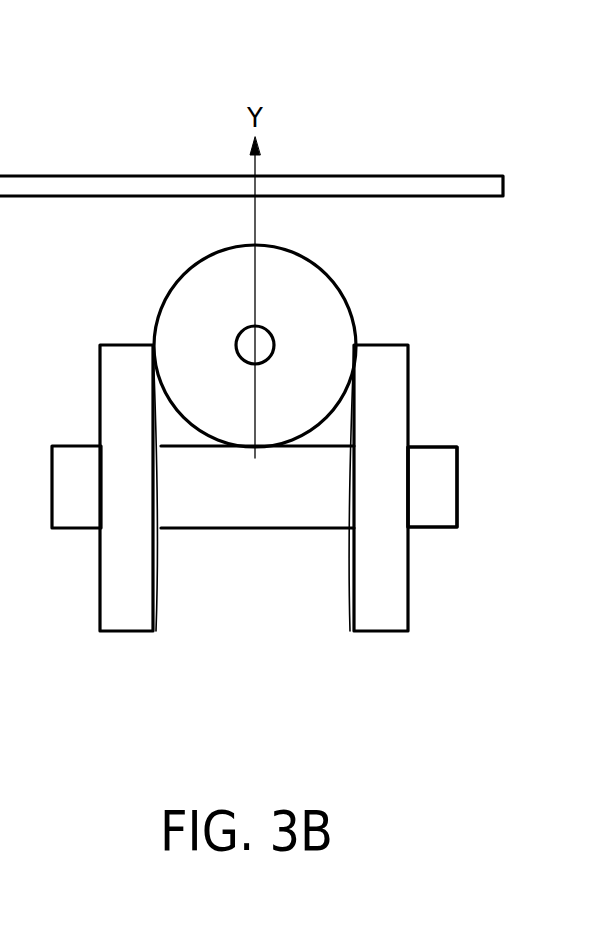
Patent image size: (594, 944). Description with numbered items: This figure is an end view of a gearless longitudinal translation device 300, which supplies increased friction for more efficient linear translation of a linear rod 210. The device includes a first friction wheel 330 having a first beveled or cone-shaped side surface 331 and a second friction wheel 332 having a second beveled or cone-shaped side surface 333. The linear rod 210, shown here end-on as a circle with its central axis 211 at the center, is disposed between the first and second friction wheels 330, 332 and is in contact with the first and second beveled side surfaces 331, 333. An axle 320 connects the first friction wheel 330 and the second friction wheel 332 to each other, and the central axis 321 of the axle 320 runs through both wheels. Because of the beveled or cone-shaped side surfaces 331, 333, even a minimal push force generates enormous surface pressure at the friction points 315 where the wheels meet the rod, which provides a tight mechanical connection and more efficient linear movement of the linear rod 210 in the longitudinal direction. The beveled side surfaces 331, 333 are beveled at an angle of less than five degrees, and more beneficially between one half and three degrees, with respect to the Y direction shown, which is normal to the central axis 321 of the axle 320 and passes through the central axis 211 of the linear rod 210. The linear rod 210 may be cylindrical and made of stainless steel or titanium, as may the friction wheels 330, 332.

The gearless longitudinal translation device 300 is at (460, 113).
The linear rod 210 is at (295, 264).
The central axis 211 is at (268, 327).
The friction points 315 is at (151, 340).
The axle 320 is at (257, 451).
The central axis 321 is at (459, 490).
The first friction wheel 330 is at (123, 632).
The first beveled side surface 331 is at (162, 570).
The second friction wheel 332 is at (387, 632).
The second beveled side surface 333 is at (348, 570).